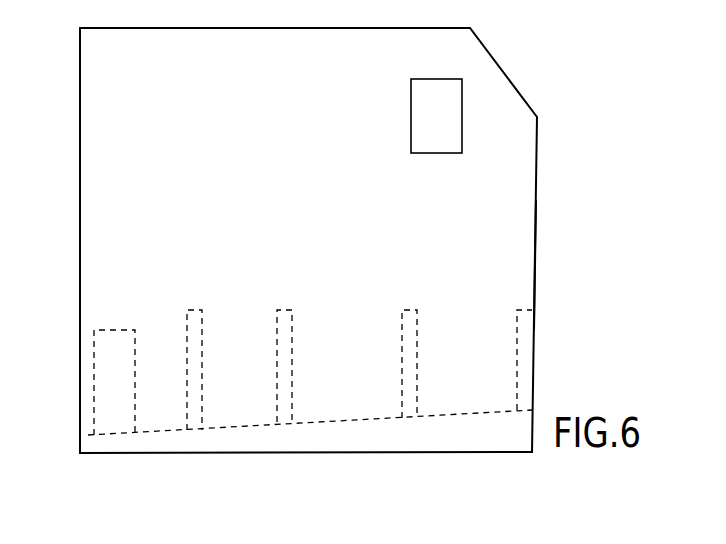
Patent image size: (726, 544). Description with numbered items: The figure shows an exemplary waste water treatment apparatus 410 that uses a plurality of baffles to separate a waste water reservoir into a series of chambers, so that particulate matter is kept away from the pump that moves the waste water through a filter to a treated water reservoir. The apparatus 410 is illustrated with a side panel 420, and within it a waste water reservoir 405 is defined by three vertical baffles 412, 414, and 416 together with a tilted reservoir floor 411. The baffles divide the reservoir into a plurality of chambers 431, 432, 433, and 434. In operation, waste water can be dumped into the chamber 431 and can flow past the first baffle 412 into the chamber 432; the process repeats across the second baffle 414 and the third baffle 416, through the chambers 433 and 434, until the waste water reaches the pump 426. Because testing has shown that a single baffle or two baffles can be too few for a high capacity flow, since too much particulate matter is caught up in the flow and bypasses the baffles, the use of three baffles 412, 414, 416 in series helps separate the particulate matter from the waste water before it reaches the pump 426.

The apparatus 410 is at (588, 78).
The side panel 420 is at (527, 243).
The waste water reservoir 405 is at (352, 328).
The tilted reservoir floor 411 is at (373, 418).
The pump 426 is at (110, 385).
The chamber 434 is at (157, 340).
The chamber 433 is at (230, 333).
The baffle 416 is at (192, 395).
The baffle 414 is at (280, 393).
The chamber 432 is at (345, 393).
The first baffle 412 is at (412, 387).
The chamber 431 is at (493, 380).